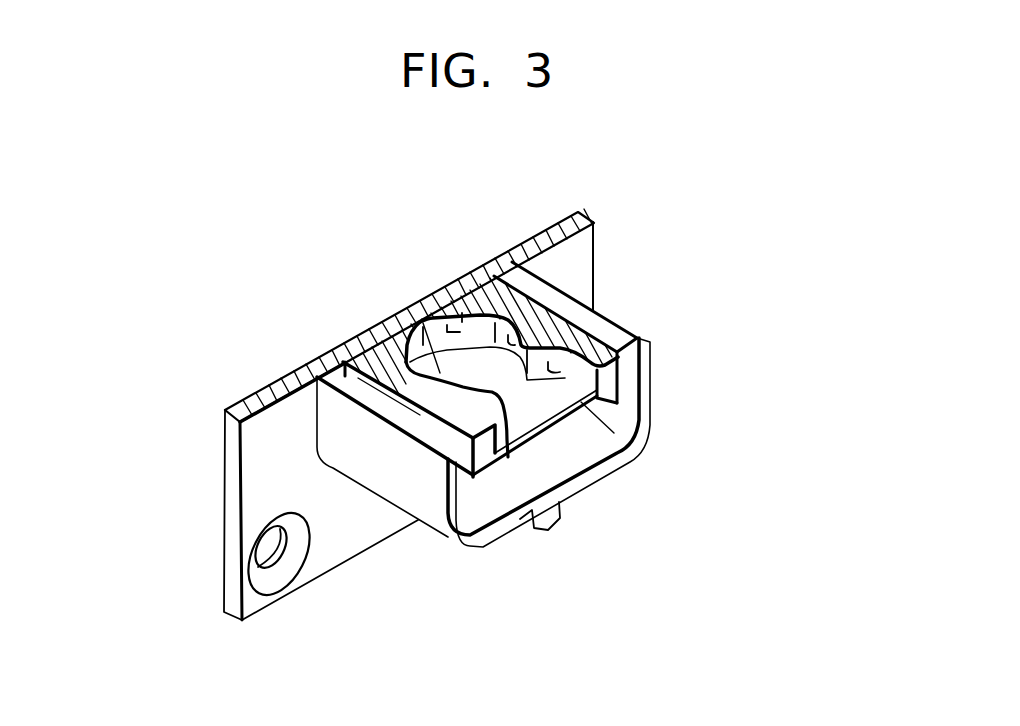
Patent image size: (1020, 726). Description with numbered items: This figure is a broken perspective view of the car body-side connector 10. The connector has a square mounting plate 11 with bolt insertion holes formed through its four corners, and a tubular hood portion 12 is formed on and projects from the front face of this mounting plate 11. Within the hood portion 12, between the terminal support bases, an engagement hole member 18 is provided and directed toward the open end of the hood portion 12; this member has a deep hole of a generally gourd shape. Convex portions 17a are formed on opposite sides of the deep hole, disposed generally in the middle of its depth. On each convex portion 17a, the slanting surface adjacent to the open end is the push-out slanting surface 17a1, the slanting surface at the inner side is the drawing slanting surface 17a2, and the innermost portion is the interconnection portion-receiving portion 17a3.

The car body-side connector 10 is at (576, 560).
The mounting plate 11 is at (332, 545).
The hood portion 12 is at (437, 518).
The convex portion 17a is at (350, 340).
The push-out slanting surface 17a1 is at (508, 457).
The drawing slanting surface 17a2 is at (423, 327).
The interconnection portion-receiving portion 17a3 is at (462, 313).
The engagement hole member 18 is at (612, 382).